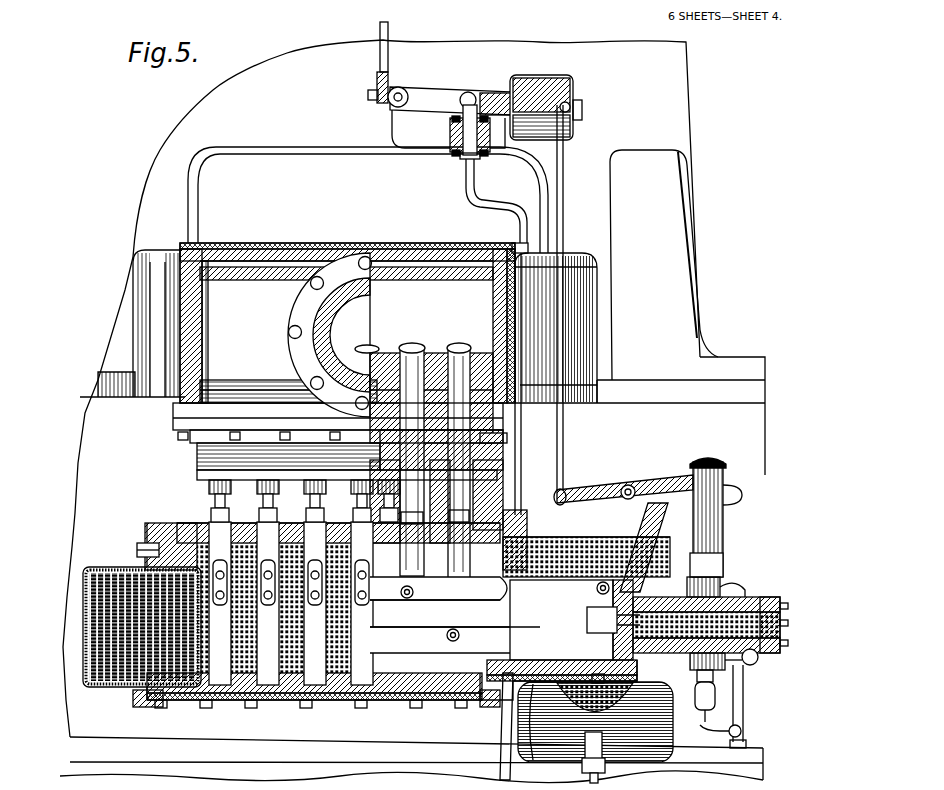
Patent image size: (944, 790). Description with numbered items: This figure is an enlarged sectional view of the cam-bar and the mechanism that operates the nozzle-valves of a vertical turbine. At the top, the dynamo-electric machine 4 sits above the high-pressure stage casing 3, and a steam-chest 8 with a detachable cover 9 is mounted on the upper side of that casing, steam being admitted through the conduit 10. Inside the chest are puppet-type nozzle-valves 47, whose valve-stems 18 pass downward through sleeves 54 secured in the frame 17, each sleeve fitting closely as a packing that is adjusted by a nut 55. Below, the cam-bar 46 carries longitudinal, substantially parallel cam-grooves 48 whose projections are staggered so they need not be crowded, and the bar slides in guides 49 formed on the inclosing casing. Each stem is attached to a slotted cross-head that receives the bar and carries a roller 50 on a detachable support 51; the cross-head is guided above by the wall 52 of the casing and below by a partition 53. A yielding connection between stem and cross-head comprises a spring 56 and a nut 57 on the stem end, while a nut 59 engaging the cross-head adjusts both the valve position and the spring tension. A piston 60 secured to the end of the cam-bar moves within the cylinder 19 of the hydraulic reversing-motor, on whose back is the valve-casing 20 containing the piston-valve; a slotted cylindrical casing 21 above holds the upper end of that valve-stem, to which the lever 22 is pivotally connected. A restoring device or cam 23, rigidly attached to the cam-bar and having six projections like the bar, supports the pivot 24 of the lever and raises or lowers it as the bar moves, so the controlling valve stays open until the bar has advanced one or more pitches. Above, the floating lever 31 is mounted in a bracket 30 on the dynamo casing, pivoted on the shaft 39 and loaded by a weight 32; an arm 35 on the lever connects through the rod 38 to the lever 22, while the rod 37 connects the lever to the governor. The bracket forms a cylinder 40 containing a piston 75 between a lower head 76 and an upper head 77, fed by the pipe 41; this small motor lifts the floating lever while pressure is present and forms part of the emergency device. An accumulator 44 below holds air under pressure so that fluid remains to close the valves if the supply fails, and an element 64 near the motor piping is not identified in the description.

The high-pressure stage casing 3 is at (765, 423).
The dynamo-electric machine 4 is at (692, 100).
The steam-chest 8 is at (438, 373).
The detachable cover 9 is at (404, 243).
The conduit 10 is at (318, 313).
The frame 17 is at (197, 465).
The valve-stems 18 is at (370, 514).
The cylinder of hydraulic reversing-motor 19 is at (755, 657).
The valve-casing 20 is at (695, 590).
The slotted cylindrical casing 21 is at (724, 470).
The lever 22 is at (583, 494).
The restoring device or cam 23 is at (648, 533).
The pivot 24 is at (630, 485).
The bracket 30 is at (415, 142).
The floating lever 31 is at (430, 92).
The weight 32 is at (540, 80).
The arm 35 is at (497, 93).
The rod 37 is at (378, 55).
The rod 38 is at (565, 200).
The shaft 39 is at (391, 103).
The cylinder 40 is at (492, 138).
The pipe 41 is at (475, 200).
The accumulator 44 is at (672, 728).
The cam-bar 46 is at (575, 618).
The nozzle-valves 47 is at (410, 346).
The cam-grooves 48 is at (520, 577).
The guides 49 is at (490, 578).
The roller 50 is at (497, 700).
The detachable support 51 is at (160, 548).
The wall 52 is at (247, 540).
The partition 53 is at (258, 703).
The sleeve 54 is at (521, 460).
The nut 55 is at (208, 490).
The spring 56 is at (437, 580).
The nut 57 is at (470, 580).
The nut 59 is at (298, 540).
The piston 60 is at (775, 618).
The valve fitting 64 is at (697, 676).
The piston 75 is at (448, 147).
The head 76 is at (463, 160).
The upper head 77 is at (444, 106).